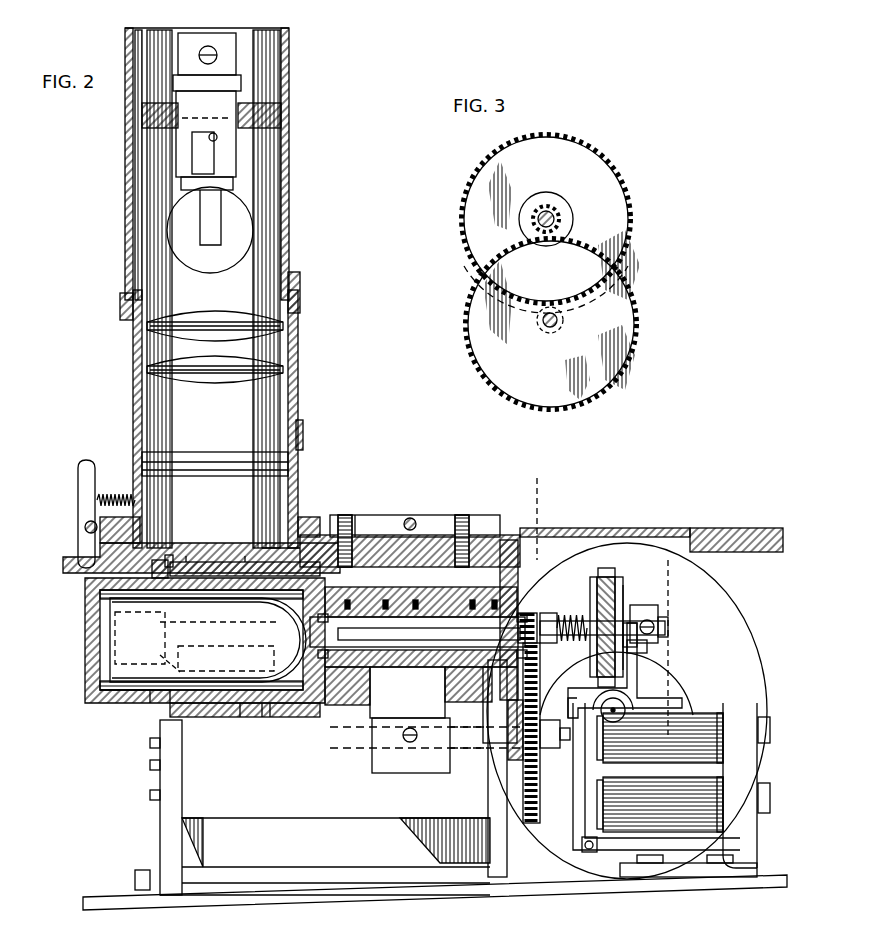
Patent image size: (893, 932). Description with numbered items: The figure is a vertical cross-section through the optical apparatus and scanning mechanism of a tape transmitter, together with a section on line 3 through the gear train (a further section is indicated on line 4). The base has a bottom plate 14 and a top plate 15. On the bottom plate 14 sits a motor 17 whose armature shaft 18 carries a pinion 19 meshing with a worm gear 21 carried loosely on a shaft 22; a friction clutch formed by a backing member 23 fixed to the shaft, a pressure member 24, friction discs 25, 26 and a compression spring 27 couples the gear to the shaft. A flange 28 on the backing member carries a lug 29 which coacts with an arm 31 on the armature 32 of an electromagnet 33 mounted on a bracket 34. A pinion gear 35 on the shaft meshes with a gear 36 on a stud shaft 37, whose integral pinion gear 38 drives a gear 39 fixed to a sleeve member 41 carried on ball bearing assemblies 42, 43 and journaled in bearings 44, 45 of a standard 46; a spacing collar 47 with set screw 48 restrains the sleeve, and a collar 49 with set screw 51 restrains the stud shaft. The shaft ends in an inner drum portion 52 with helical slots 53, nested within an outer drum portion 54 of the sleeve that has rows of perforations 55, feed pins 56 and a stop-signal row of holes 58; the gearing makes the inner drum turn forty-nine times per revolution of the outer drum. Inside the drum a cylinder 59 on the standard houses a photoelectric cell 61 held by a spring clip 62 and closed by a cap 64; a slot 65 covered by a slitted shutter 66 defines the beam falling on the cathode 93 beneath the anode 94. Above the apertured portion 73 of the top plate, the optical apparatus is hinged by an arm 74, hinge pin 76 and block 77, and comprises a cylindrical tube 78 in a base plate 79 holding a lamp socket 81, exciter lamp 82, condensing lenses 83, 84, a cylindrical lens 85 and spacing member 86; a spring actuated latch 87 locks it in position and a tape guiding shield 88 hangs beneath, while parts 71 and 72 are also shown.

In FIG. 2, the bottom plate 14 is at (787, 881).
In FIG. 2, the top plate 15 is at (785, 542).
In FIG. 2, the motor 17 is at (737, 605).
In FIG. 2, the armature shaft 18 is at (615, 708).
In FIG. 2, the pinion 19 is at (633, 700).
In FIG. 2, the worm gear 21 is at (625, 655).
In FIG. 2, the shaft 22 is at (668, 623).
In FIG. 3, the shaft 22 is at (555, 224).
In FIG. 2, the backing member 23 is at (638, 605).
In FIG. 2, the pressure member 24 is at (592, 580).
In FIG. 2, the disc of friction material 25 is at (596, 577).
In FIG. 2, the disc of friction material 26 is at (619, 572).
In FIG. 2, the compression spring 27 is at (580, 612).
In FIG. 2, the flange 28 is at (627, 580).
In FIG. 2, the lug 29 is at (630, 640).
In FIG. 2, the arm 31 is at (635, 670).
In FIG. 2, the armature 32 is at (578, 780).
In FIG. 2, the electromagnet 33 is at (660, 772).
In FIG. 2, the bracket 34 is at (752, 775).
In FIG. 2, the pinion gear 35 is at (531, 612).
In FIG. 3, the pinion gear 35 is at (562, 213).
In FIG. 2, the gear 36 is at (526, 812).
In FIG. 3, the gear 36 is at (633, 343).
In FIG. 2, the stud shaft 37 is at (480, 745).
In FIG. 3, the stud shaft 37 is at (560, 321).
In FIG. 2, the pinion gear 38 is at (517, 748).
In FIG. 3, the pinion gear 38 is at (640, 283).
In FIG. 2, the gear 39 is at (513, 542).
In FIG. 3, the gear 39 is at (630, 160).
In FIG. 2, the sleeve member 41 is at (398, 624).
In FIG. 2, the ball bearing assembly 42 is at (421, 594).
In FIG. 2, the ball bearing assembly 43 is at (498, 605).
In FIG. 3, the ball bearing assembly 43 is at (570, 205).
In FIG. 2, the bearing 44 is at (368, 689).
In FIG. 2, the bearing 45 is at (455, 686).
In FIG. 2, the standard 46 is at (190, 805).
In FIG. 2, the spacing collar 47 is at (386, 600).
In FIG. 2, the set screw 48 is at (414, 600).
In FIG. 2, the collar 49 is at (406, 760).
In FIG. 2, the set screw 51 is at (411, 744).
In FIG. 2, the drum portion 52 is at (300, 716).
In FIG. 2, the slots 53 is at (182, 562).
In FIG. 2, the drum portion 54 is at (275, 716).
In FIG. 2, the perforations 55 is at (238, 716).
In FIG. 2, the feed pins 56 is at (212, 560).
In FIG. 2, the row of holes 58 is at (265, 716).
In FIG. 2, the cylinder 59 is at (128, 700).
In FIG. 2, the photoelectric cell 61 is at (117, 676).
In FIG. 2, the spring clip 62 is at (118, 694).
In FIG. 2, the cap 64 is at (92, 613).
In FIG. 2, the slot 65 is at (203, 580).
In FIG. 2, the shutter 66 is at (252, 583).
In FIG. 2, the sleeve 71 is at (190, 557).
In FIG. 2, the ring 72 is at (262, 552).
In FIG. 2, the apertured portion 73 is at (245, 558).
In FIG. 2, the arm 74 is at (372, 520).
In FIG. 2, the hinge pin 76 is at (410, 522).
In FIG. 2, the block 77 is at (485, 525).
In FIG. 2, the cylindrical tube 78 is at (297, 403).
In FIG. 2, the base plate 79 is at (100, 527).
In FIG. 2, the lamp socket 81 is at (228, 93).
In FIG. 2, the exciter lamp 82 is at (258, 228).
In FIG. 2, the condensing lens 83 is at (241, 313).
In FIG. 2, the condensing lens 84 is at (252, 366).
In FIG. 2, the cylindrical lens 85 is at (253, 455).
In FIG. 2, the spacing member 86 is at (268, 263).
In FIG. 2, the spring actuated latch 87 is at (86, 476).
In FIG. 2, the tape guiding shield 88 is at (174, 558).
In FIG. 2, the cathode 93 is at (152, 706).
In FIG. 2, the anode 94 is at (278, 612).
In FIG. 2, the section line 3— 3 is at (526, 470).
In FIG. 2, the section line 4— 4 is at (656, 573).